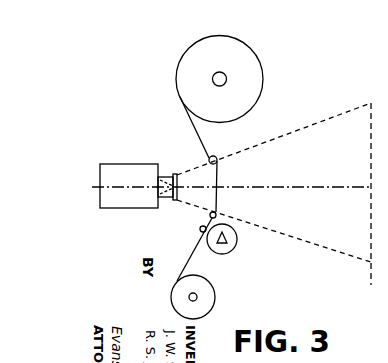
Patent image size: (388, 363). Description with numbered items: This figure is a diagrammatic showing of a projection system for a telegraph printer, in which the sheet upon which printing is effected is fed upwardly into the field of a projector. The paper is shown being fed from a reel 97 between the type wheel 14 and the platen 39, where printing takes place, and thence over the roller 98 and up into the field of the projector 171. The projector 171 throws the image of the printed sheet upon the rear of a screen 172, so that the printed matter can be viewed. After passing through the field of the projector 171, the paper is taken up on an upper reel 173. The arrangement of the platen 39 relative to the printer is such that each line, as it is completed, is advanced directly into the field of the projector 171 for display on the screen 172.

The upper reel 173 is at (257, 88).
The projector 171 is at (120, 208).
The roller 98 is at (210, 215).
The platen 39 is at (200, 230).
The type wheel 14 is at (233, 250).
The reel 97 is at (215, 296).
The screen 172 is at (369, 253).